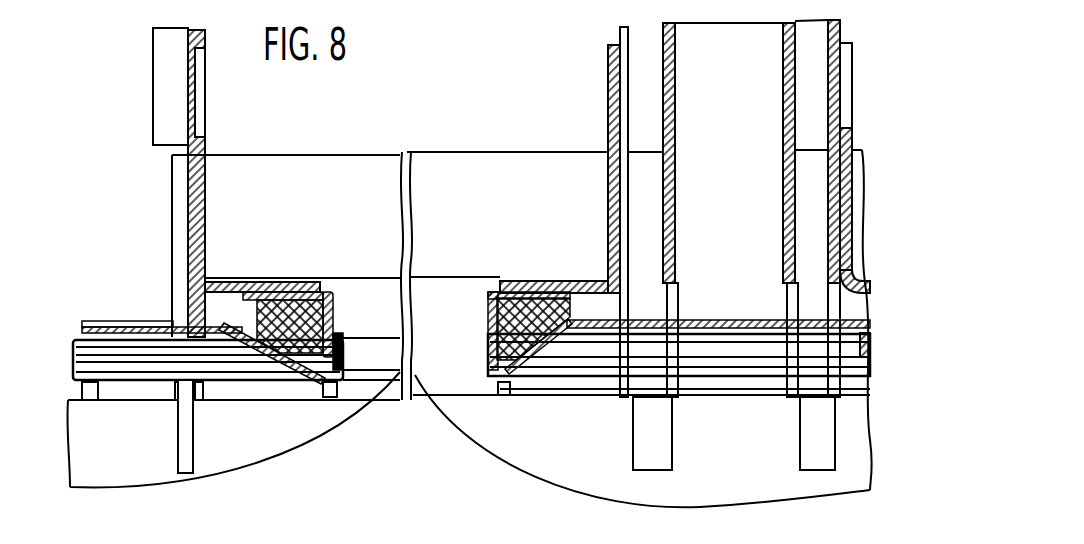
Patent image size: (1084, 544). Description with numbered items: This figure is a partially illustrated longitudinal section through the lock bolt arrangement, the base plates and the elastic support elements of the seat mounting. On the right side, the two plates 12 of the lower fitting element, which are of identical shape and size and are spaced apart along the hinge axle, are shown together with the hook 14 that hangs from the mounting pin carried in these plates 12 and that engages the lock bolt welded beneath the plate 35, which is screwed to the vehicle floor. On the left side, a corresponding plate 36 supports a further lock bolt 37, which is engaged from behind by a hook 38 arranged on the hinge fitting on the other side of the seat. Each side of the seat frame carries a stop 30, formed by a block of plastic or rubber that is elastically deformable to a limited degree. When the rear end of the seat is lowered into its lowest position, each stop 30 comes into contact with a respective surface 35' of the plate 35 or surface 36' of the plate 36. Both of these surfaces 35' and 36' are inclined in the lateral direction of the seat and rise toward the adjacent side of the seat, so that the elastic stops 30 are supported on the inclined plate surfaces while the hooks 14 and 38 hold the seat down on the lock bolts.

The plate 12 is at (623, 103).
The hook 14 is at (662, 437).
The stop 30 is at (283, 282).
The plate 35 is at (687, 312).
The inclined surface 35' is at (536, 371).
The plate 36 is at (203, 320).
The inclined surface 36' is at (293, 373).
The lock bolt 37 is at (137, 382).
The hook 38 is at (188, 423).